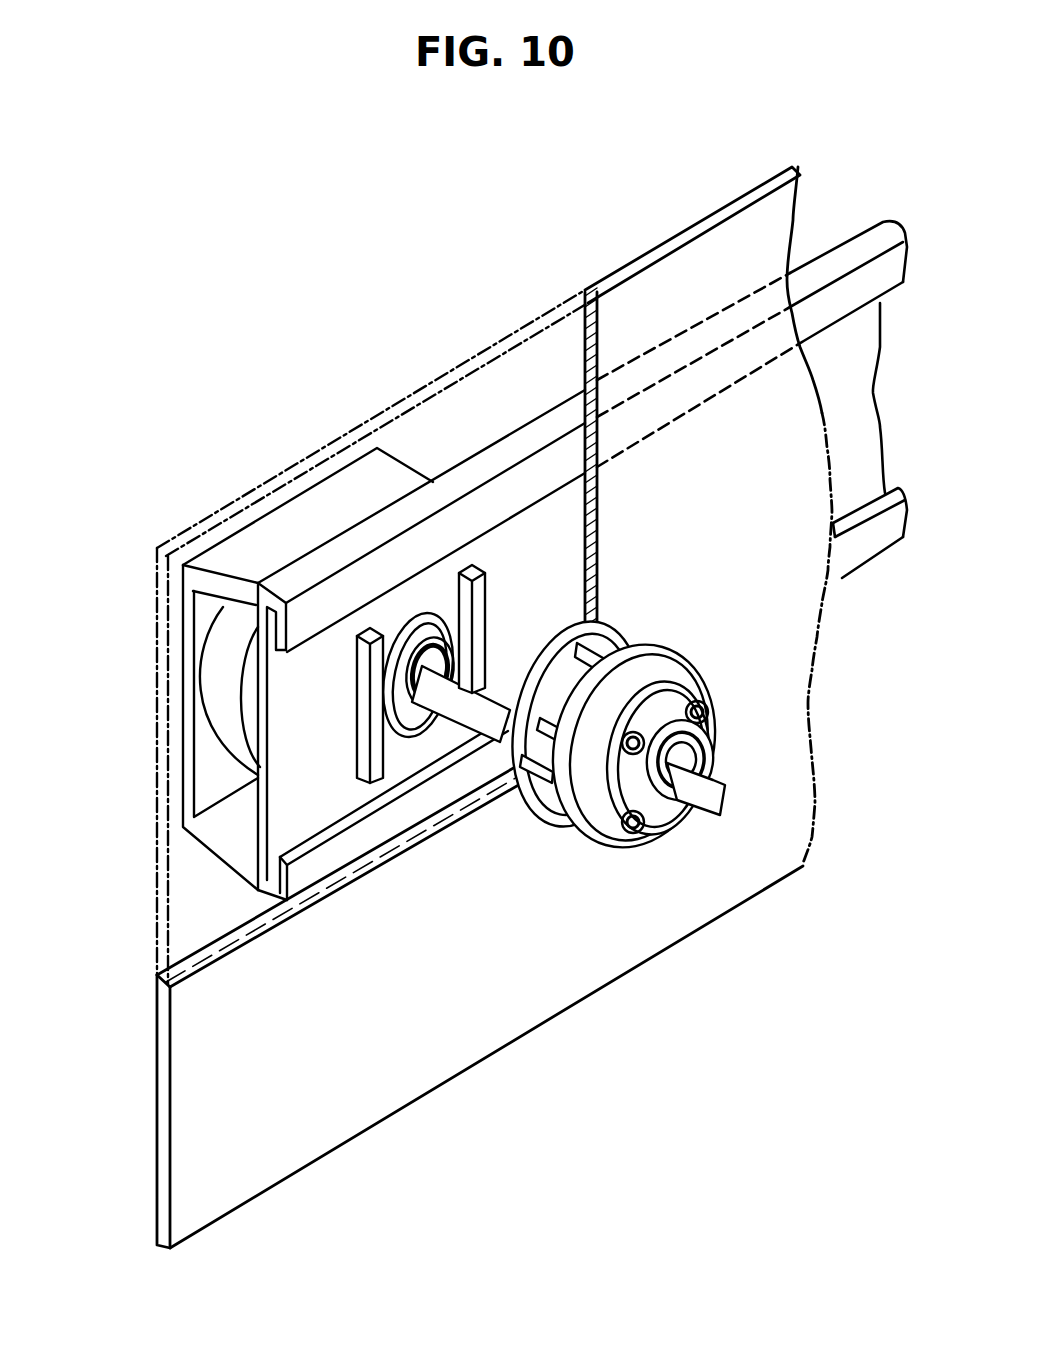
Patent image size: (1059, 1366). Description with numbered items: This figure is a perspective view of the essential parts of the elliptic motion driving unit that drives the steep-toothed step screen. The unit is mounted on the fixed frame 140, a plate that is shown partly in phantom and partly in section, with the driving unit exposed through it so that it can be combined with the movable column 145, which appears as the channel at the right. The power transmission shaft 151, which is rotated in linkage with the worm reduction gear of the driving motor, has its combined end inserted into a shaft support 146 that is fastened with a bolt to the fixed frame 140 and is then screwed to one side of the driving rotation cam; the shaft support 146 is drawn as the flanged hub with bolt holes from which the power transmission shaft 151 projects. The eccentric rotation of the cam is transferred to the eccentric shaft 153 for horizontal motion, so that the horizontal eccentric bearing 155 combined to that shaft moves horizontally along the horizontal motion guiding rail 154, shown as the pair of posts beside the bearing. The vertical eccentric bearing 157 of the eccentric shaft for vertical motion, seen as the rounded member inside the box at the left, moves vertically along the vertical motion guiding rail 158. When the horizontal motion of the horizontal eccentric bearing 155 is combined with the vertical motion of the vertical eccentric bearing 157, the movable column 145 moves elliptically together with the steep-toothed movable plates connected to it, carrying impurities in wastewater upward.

The fixed frame 140 is at (630, 288).
The movable column 145 is at (848, 247).
The shaft support 146 is at (610, 800).
The power transmission shaft 151 is at (717, 762).
The eccentric shaft for horizontal motion 153 is at (490, 685).
The horizontal motion guiding rail 154 is at (362, 748).
The horizontal eccentric bearing 155 is at (417, 722).
The vertical eccentric bearing 157 is at (212, 684).
The vertical motion guiding rail 158 is at (217, 843).